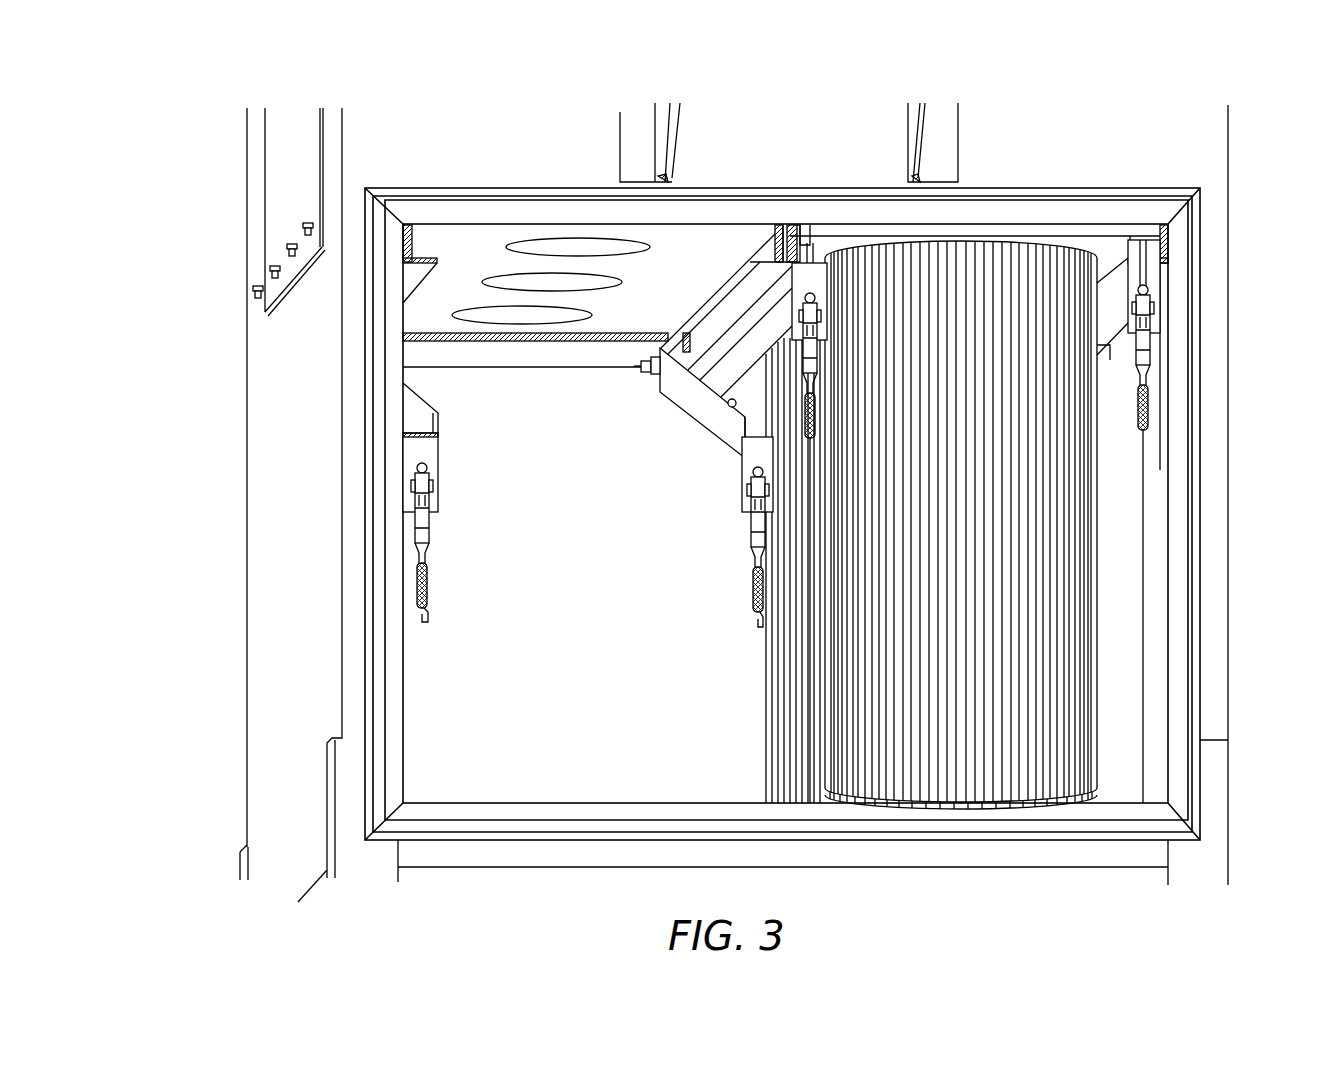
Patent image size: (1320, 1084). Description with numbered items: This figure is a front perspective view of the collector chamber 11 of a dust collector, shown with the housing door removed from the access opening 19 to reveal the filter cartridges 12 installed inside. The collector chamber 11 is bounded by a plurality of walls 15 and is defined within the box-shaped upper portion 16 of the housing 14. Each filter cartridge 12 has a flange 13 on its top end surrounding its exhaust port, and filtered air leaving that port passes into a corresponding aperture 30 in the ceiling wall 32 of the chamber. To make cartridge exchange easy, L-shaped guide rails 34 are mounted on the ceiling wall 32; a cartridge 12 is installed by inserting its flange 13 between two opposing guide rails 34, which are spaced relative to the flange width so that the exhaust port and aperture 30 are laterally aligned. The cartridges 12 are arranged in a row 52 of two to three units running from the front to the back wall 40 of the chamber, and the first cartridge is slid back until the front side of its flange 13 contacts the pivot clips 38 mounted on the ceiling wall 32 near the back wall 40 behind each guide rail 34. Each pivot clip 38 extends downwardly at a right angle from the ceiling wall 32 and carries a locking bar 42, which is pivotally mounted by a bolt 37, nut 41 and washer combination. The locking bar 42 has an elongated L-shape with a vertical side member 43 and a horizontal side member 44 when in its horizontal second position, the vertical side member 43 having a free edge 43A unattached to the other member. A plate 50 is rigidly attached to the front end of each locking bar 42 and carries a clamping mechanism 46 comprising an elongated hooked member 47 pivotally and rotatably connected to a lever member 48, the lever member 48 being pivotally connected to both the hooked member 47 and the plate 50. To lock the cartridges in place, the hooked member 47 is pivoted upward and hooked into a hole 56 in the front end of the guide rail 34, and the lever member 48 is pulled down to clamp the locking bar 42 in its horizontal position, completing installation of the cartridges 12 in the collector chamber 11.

The collector chamber 11 is at (427, 758).
The filter cartridge 12 is at (1075, 707).
The flange 13 is at (1075, 237).
The housing 14 is at (268, 352).
The walls 15 is at (1158, 567).
The upper portion 16 is at (285, 633).
The access opening 19 is at (600, 845).
The aperture 30 is at (490, 316).
The ceiling wall 32 is at (707, 260).
The L-shaped guide rail 34 is at (803, 233).
The bolt 37 is at (643, 367).
The pivot clip 38 is at (670, 337).
The back wall 40 is at (420, 680).
The nut 41 is at (656, 374).
The locking bar 42 is at (678, 397).
The vertical side member 43 is at (1122, 243).
The free edge of vertical side member 43A is at (732, 407).
The horizontal side member 44 is at (1115, 323).
The clamping mechanism 46 is at (412, 505).
The hooked member 47 is at (760, 623).
The lever member 48 is at (1153, 413).
The plate 50 is at (413, 458).
The row 52 is at (738, 760).
The hole 56 is at (775, 230).